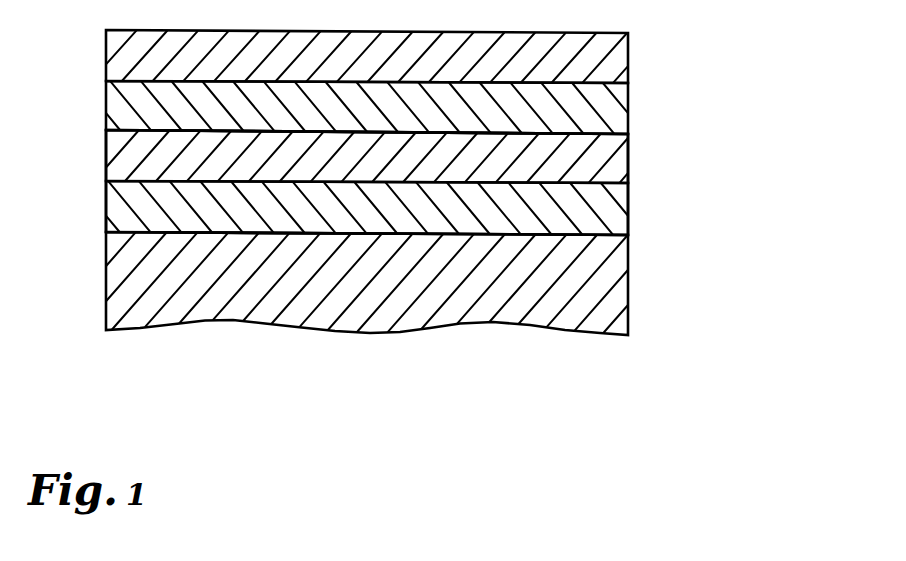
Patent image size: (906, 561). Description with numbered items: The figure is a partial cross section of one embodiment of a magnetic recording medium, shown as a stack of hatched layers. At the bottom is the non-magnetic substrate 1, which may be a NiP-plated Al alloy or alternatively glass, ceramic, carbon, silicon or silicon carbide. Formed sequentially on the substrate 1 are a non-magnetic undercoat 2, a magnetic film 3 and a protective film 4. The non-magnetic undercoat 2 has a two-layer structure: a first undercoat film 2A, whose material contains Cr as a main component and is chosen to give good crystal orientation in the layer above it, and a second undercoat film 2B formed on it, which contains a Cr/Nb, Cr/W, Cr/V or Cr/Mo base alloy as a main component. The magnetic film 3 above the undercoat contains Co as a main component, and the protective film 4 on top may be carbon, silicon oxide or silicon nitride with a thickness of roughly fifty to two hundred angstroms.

The non-magnetic substrate 1 is at (615, 303).
The non-magnetic undercoat 2 is at (733, 150).
The first undercoat film 2A is at (619, 222).
The second undercoat film 2B is at (619, 164).
The magnetic film 3 is at (615, 118).
The protective film 4 is at (618, 65).